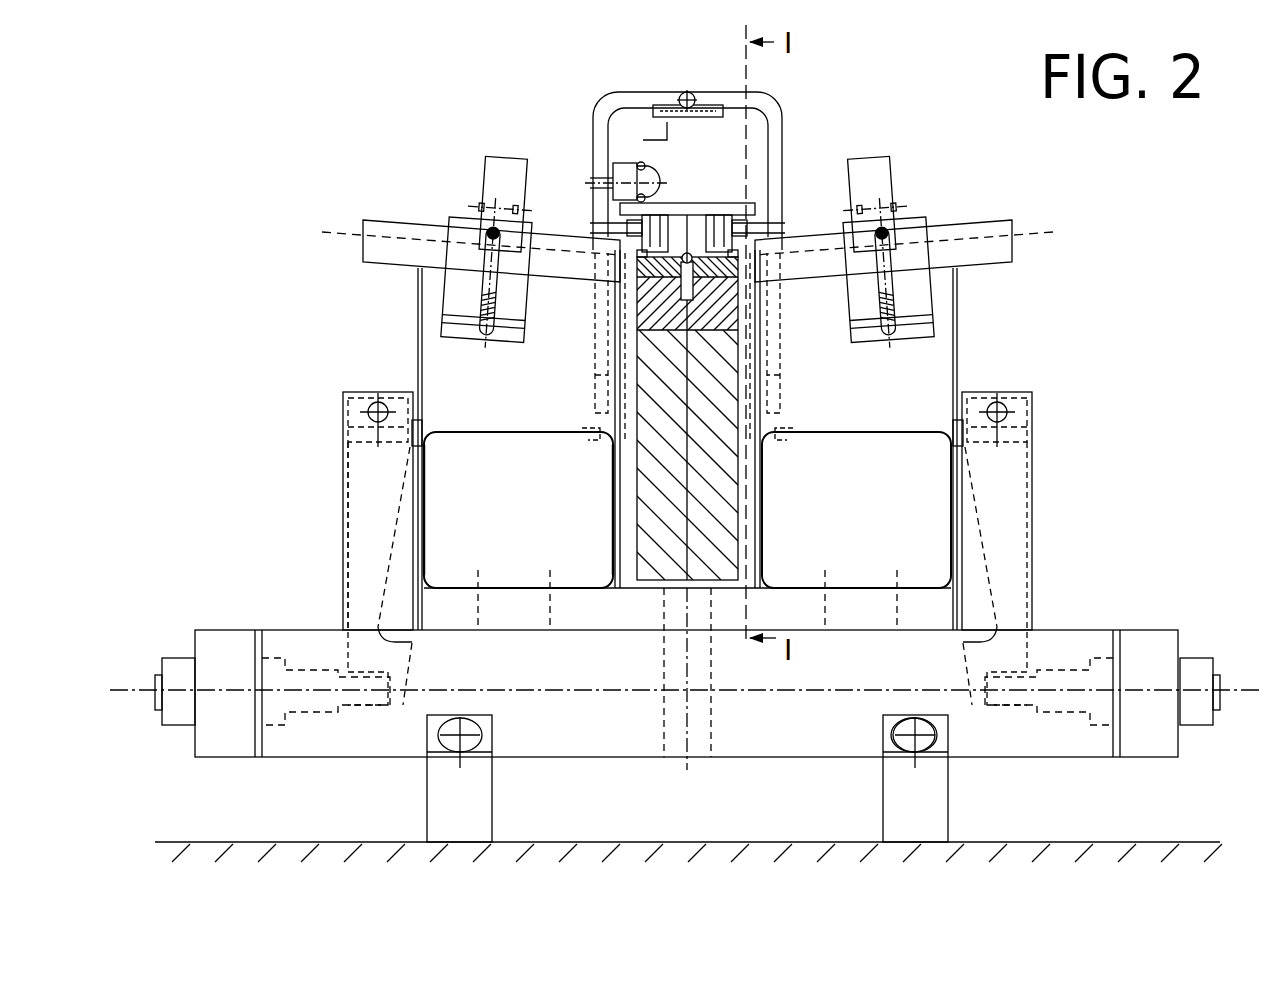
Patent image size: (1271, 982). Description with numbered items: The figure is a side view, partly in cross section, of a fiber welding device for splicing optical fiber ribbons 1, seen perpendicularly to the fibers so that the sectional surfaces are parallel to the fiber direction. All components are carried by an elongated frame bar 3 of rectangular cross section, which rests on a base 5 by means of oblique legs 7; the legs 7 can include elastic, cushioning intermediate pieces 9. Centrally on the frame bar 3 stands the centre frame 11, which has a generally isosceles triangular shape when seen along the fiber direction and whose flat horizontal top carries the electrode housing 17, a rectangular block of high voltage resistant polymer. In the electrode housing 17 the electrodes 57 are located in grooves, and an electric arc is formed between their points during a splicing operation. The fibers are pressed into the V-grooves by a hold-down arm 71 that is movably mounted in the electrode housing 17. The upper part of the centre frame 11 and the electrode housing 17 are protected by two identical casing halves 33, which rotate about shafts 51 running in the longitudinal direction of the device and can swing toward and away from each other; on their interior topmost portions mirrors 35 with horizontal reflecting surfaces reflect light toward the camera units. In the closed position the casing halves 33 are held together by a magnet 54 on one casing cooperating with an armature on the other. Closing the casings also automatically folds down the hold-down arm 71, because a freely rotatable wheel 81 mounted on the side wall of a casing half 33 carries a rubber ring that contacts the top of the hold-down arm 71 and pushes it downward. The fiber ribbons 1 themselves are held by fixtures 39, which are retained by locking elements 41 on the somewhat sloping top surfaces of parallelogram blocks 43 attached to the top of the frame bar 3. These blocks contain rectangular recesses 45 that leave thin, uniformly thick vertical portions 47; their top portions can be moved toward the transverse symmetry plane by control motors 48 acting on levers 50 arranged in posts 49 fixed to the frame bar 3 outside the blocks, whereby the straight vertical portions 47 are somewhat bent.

The fiber ribbons 1 is at (330, 243).
The frame bar 3 is at (303, 643).
The base 5 is at (332, 850).
The legs 7 is at (485, 797).
The elastic cushioning intermediate pieces 9 is at (940, 733).
The centre frame 11 is at (714, 366).
The electrode housing 17 is at (722, 300).
The casing halves 33 is at (773, 113).
The mirrors 35 is at (666, 128).
The fixtures 39 is at (687, 224).
The locking elements 41 is at (490, 157).
The parallelogram blocks 43 is at (418, 353).
The rectangular recesses 45 is at (534, 478).
The vertical portions 47 is at (426, 516).
The control motors 48 is at (220, 642).
The posts 49 is at (342, 510).
The levers 50 is at (353, 560).
The shafts 51 is at (784, 444).
The magnet 54 is at (682, 90).
The electrodes 57 is at (692, 252).
The hold-down arm 71 is at (687, 196).
The wheel 81 is at (618, 160).